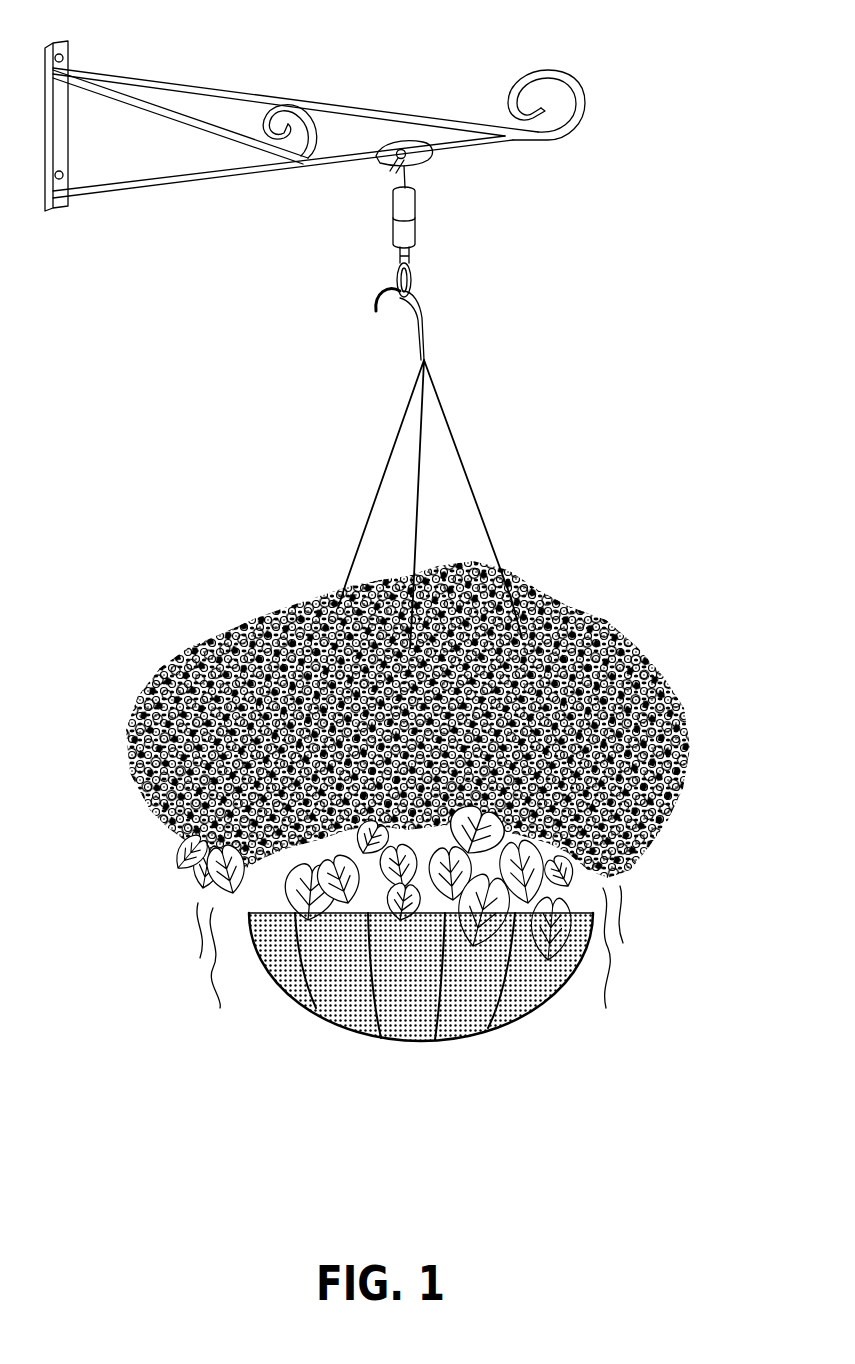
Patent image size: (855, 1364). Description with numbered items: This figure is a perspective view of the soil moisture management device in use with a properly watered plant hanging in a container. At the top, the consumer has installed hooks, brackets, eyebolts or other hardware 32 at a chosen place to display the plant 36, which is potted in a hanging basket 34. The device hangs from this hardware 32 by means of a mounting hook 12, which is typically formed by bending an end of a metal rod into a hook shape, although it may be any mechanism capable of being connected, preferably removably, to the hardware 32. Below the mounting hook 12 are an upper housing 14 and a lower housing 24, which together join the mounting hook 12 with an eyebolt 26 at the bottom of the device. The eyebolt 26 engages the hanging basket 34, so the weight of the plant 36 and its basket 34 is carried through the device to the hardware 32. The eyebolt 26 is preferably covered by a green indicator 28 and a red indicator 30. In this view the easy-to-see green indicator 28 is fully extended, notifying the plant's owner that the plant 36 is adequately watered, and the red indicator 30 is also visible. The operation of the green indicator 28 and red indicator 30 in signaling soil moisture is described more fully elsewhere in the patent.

The hardware 32 is at (157, 77).
The mounting hook 12 is at (383, 158).
The upper housing 14 is at (398, 193).
The lower housing 24 is at (383, 226).
The green indicator 28 is at (402, 248).
The red indicator 30 is at (389, 258).
The eyebolt 26 is at (391, 300).
The plant 36 is at (225, 648).
The hanging basket 34 is at (452, 1008).